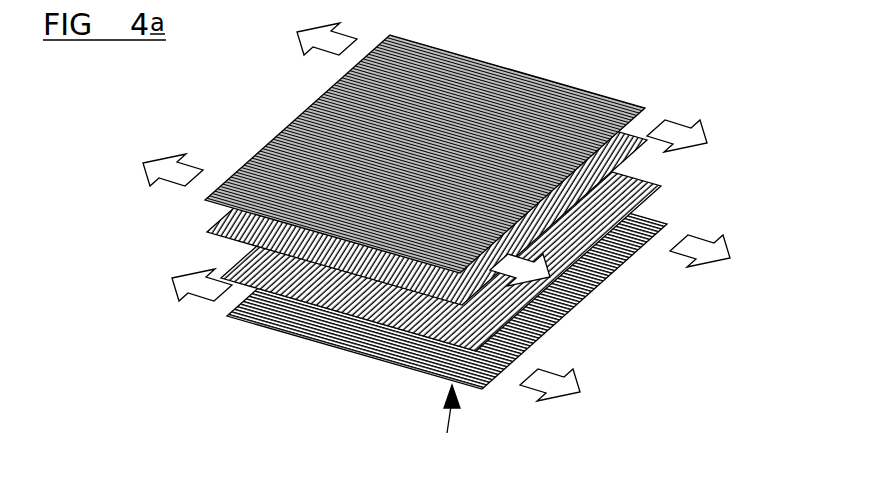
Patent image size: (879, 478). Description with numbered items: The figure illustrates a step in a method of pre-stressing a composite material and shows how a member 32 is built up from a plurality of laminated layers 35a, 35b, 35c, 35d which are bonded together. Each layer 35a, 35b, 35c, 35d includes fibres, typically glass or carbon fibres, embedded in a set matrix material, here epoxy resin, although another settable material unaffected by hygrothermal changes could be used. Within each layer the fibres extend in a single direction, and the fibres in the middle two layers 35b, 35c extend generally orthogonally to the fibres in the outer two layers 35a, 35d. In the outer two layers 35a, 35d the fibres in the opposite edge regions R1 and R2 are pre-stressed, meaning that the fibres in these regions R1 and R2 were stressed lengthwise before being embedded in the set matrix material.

The laminated layer 35a is at (588, 108).
The laminated layer 35b is at (214, 237).
The laminated layer 35c is at (252, 263).
The laminated layer 35d is at (358, 347).
The edge region R1 is at (281, 229).
The edge region R2 is at (650, 210).
The member 32 is at (447, 433).